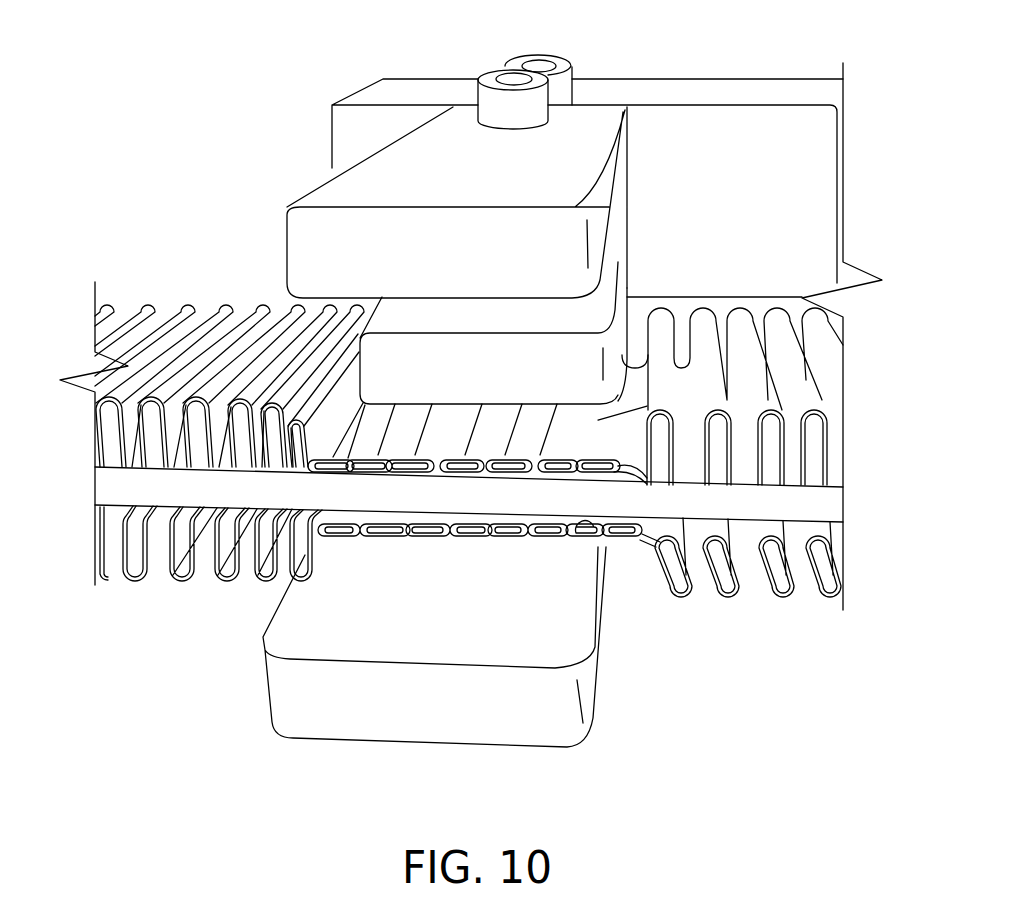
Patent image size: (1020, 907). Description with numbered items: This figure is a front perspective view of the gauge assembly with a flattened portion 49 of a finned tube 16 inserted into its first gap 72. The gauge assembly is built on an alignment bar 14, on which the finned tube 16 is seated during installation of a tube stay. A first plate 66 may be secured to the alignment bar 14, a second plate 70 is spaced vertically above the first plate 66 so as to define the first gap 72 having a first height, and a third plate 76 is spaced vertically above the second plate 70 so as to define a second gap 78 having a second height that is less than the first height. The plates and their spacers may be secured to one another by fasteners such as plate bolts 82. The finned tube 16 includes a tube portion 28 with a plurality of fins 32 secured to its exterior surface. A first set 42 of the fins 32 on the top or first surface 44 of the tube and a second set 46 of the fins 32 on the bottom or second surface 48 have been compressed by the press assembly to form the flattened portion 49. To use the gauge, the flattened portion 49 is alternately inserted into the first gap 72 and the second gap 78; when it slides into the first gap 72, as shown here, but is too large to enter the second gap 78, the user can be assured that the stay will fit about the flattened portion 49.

The alignment bar 14 is at (820, 170).
The finned tube 16 is at (124, 477).
The tube portion 28 is at (823, 503).
The fins 32 is at (805, 401).
The first set of fins 42 is at (385, 440).
The first surface 44 is at (197, 397).
The second set of fins 46 is at (563, 546).
The second surface 48 is at (167, 508).
The flattened portion 49 is at (588, 424).
The first plate 66 is at (323, 617).
The second plate 70 is at (485, 381).
The first gap 72 is at (461, 417).
The third plate 76 is at (602, 218).
The second gap 78 is at (592, 304).
The plate bolts 82 is at (547, 95).